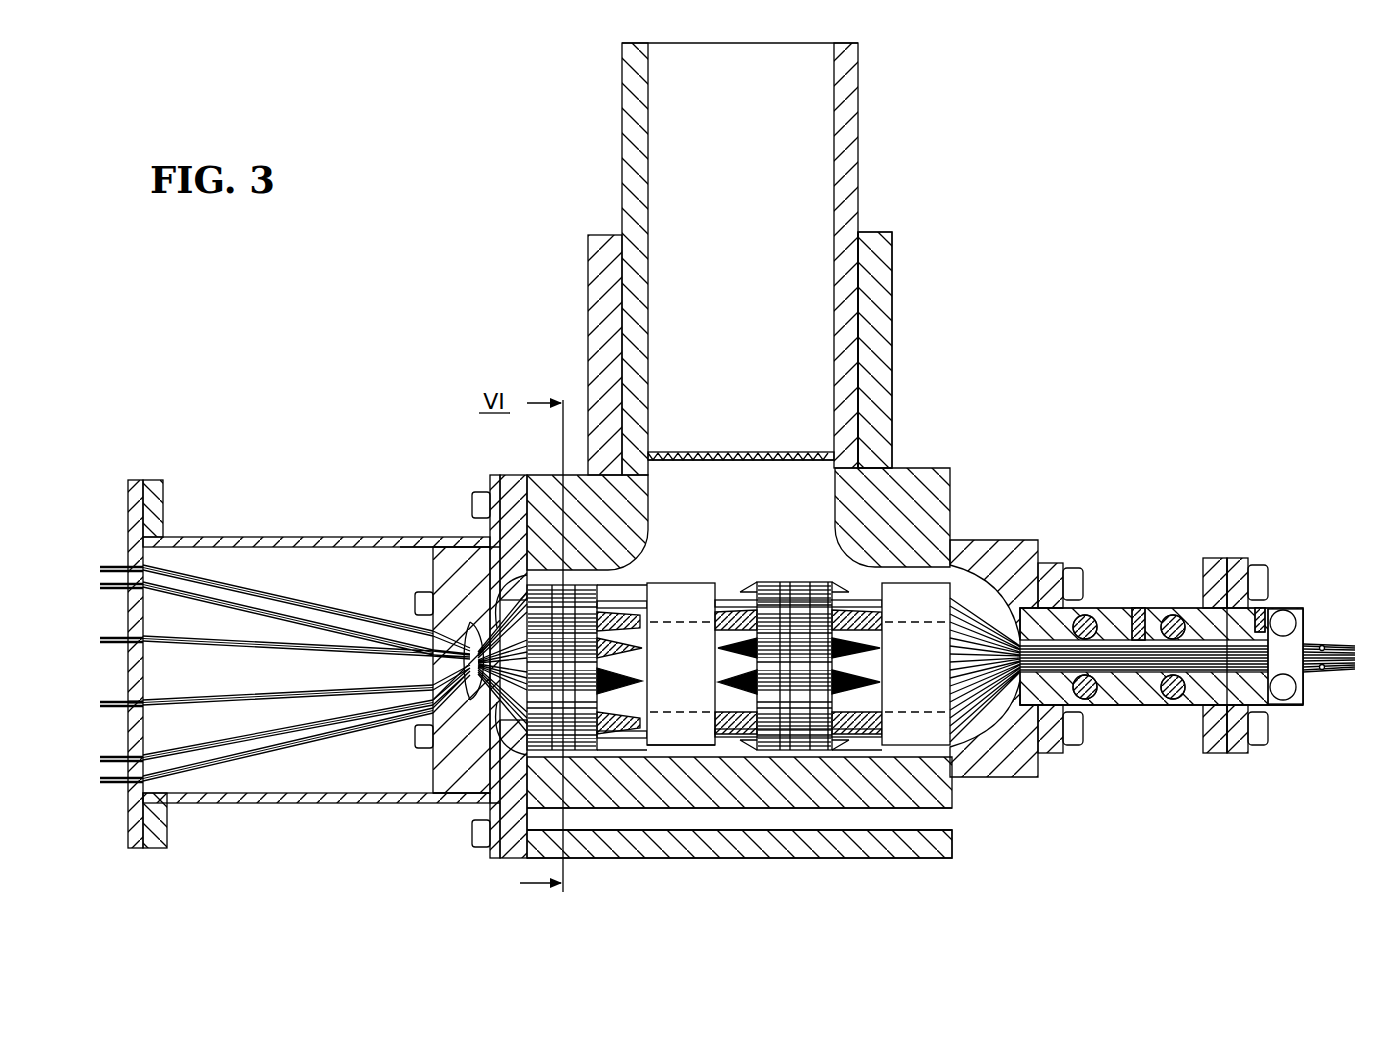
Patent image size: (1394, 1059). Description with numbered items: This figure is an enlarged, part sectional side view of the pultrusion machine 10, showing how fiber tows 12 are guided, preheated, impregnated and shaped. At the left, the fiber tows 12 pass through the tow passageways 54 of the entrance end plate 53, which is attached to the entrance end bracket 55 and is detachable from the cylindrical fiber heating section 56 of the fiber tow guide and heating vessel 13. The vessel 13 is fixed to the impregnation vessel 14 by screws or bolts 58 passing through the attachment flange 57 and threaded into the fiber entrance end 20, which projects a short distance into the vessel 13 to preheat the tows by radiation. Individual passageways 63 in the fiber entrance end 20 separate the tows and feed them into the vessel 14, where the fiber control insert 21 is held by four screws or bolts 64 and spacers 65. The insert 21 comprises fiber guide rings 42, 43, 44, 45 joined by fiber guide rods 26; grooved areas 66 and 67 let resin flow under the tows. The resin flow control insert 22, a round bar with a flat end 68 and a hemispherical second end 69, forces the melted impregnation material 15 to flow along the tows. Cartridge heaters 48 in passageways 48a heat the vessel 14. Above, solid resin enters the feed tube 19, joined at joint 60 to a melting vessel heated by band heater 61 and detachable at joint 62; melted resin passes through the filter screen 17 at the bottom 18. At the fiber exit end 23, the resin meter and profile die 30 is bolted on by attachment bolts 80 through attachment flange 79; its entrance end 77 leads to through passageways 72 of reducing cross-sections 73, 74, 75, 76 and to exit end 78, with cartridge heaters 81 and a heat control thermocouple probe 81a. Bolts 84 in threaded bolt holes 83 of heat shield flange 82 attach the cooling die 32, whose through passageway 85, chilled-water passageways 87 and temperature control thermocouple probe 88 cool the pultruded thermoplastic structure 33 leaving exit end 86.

The pultrusion machine 10 is at (528, 262).
The fiber tows 12 is at (110, 565).
The fiber tow guide and heating vessel 13 is at (315, 535).
The impregnation vessel 14 is at (543, 475).
The impregnation material 15 is at (707, 148).
The filter screen 17 is at (775, 452).
The entrance port 18 is at (732, 462).
The feed tube 19 is at (860, 143).
The fiber entrance end 20 is at (428, 560).
The fiber control insert 21 is at (709, 754).
The resin flow control insert 22 is at (430, 742).
The fiber exit end 23 is at (1020, 778).
The fiber guide rods 26 is at (640, 752).
The resin meter and profile die 30 is at (1151, 709).
The cooling die 32 is at (1280, 610).
The pultruded thermoplastic structure 33 is at (1327, 667).
The fiber guide ring 42 is at (602, 752).
The fiber guide ring 43 is at (672, 747).
The fiber guide ring 44 is at (770, 752).
The fiber guide ring 45 is at (918, 747).
The electrical cartridge heaters 48 is at (960, 820).
The passageways 48a is at (960, 840).
The entrance end plate 53 is at (130, 480).
The tow passageways 54 is at (145, 702).
The entrance end bracket 55 is at (163, 497).
The fiber heating section 56 is at (398, 537).
The attachment flange 57 is at (495, 476).
The screws or bolts 58 is at (472, 503).
The joint 60 is at (860, 232).
The band heater 61 is at (892, 285).
The joint 62 is at (853, 463).
The passageways 63 is at (440, 662).
The screws or bolts 64 is at (412, 604).
The spacers 65 is at (497, 588).
The circumferential grooved area 66 is at (570, 590).
The circumferential grooved area 67 is at (793, 582).
The flat end 68 is at (868, 752).
The second end 69 is at (470, 640).
The through passageways 72 is at (1150, 677).
The passageway cross-section 73 is at (1025, 683).
The passageway cross-section 74 is at (1085, 607).
The passageway cross-section 75 is at (1093, 620).
The passageway cross-section 76 is at (1097, 673).
The entrance end 77 is at (1017, 633).
The exit end 78 is at (1197, 707).
The attachment flange 79 is at (1050, 563).
The attachment bolts 80 is at (1073, 568).
The cartridge heaters 81 is at (1085, 730).
The heat control thermocouple probe 81a is at (1140, 607).
The heat shield flange 82 is at (1228, 558).
The threaded bolt holes 83 is at (1212, 558).
The bolts 84 is at (1258, 565).
The through passageway 85 is at (1270, 712).
The exit end 86 is at (1307, 635).
The passageways 87 is at (1303, 692).
The temperature control thermocouple probe 88 is at (1262, 610).